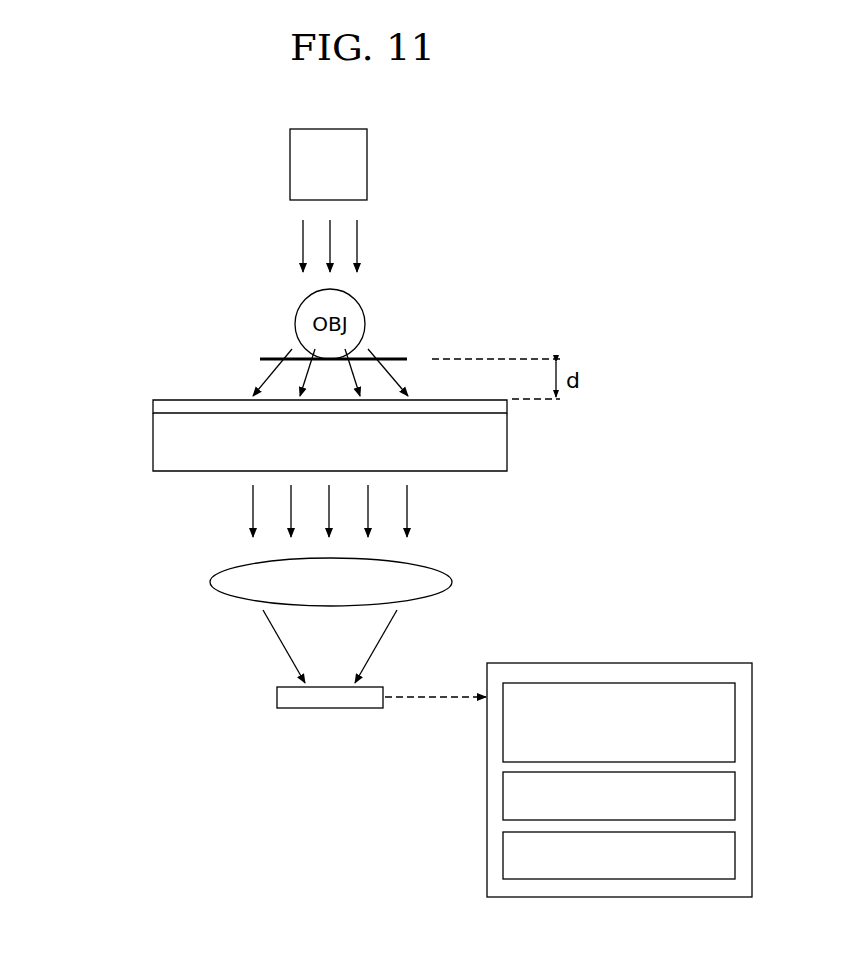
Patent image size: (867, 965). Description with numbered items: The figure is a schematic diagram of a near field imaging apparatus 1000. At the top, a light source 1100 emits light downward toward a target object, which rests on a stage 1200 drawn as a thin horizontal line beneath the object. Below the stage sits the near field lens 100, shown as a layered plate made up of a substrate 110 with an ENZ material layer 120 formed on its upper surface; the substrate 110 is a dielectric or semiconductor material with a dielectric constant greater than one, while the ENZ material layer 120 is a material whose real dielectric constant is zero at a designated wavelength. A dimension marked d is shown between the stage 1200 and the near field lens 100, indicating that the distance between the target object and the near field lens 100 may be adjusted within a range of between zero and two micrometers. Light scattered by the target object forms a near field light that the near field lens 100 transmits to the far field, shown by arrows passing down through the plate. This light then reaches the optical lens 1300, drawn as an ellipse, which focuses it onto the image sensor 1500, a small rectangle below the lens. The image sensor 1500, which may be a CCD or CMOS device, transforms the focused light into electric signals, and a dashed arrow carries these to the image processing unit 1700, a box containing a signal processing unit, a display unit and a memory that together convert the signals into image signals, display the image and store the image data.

The near field imaging apparatus 1000 is at (577, 196).
The light source 1100 is at (290, 163).
The stage 1200 is at (392, 358).
The near field lens 100 is at (74, 400).
The ENZ material layer 120 is at (153, 407).
The substrate 110 is at (153, 452).
The optical lens 1300 is at (210, 581).
The image sensor 1500 is at (277, 697).
The image processing unit 1700 is at (618, 663).